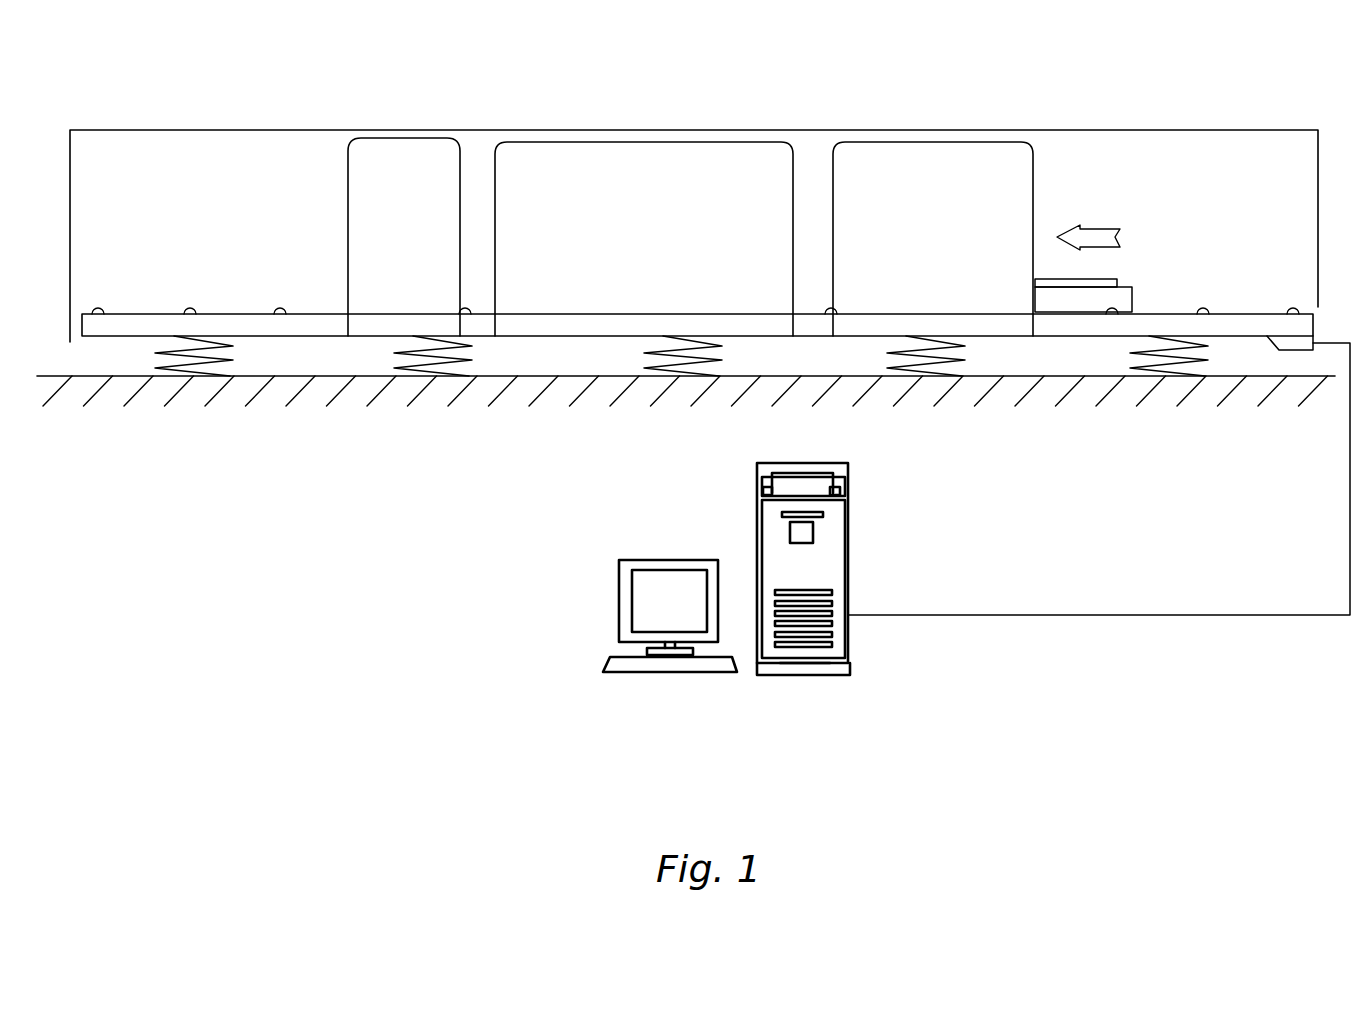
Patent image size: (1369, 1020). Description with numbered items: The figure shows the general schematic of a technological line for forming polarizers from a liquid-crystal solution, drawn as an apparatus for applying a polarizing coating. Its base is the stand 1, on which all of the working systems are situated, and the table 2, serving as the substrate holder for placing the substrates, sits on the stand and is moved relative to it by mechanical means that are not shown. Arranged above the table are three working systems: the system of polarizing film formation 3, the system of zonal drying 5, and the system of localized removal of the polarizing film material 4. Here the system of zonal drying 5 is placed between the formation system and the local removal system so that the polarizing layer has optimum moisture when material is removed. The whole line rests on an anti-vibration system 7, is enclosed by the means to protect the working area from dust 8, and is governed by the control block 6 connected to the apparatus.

The stand 1 is at (222, 328).
The table 2 is at (1122, 300).
The system of polarizing film formation 3 is at (933, 239).
The system of localized removal of the polarizing film material 4 is at (404, 237).
The system of zonal drying 5 is at (644, 239).
The control block 6 is at (747, 569).
The anti-vibration system 7 is at (435, 360).
The means to protect the working area from dust 8 is at (1132, 133).